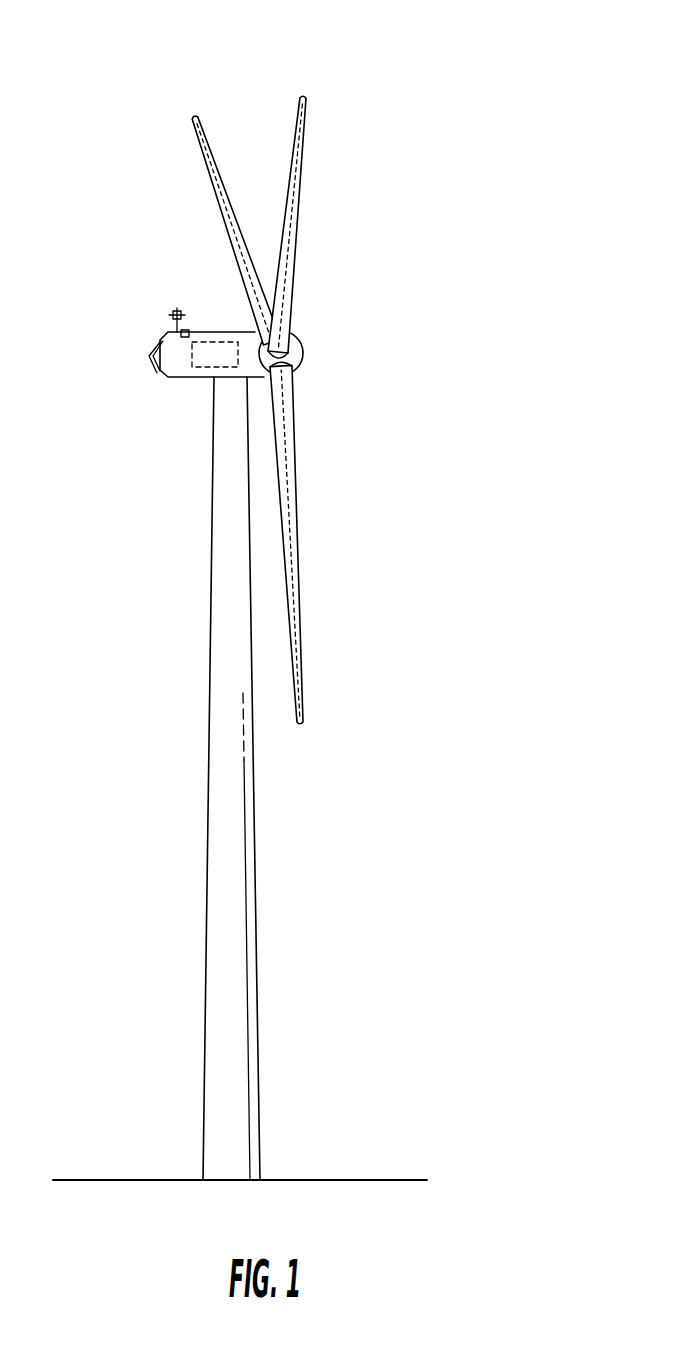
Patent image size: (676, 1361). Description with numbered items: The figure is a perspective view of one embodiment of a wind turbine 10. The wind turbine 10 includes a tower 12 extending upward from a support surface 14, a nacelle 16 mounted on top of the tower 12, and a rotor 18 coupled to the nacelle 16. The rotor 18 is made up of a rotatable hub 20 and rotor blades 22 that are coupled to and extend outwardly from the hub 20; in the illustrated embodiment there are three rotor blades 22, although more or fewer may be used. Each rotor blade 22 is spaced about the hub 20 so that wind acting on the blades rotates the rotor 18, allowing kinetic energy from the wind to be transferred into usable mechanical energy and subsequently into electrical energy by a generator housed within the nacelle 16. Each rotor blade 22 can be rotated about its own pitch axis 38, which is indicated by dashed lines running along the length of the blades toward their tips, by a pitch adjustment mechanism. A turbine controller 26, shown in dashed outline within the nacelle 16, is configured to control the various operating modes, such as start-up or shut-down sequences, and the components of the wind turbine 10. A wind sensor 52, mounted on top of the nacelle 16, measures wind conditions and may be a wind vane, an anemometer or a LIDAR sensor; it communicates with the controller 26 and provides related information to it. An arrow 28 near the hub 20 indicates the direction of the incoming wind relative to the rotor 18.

The wind turbine 10 is at (458, 160).
The tower 12 is at (258, 908).
The support surface 14 is at (110, 1180).
The nacelle 16 is at (180, 380).
The rotor 18 is at (302, 374).
The rotatable hub 20 is at (303, 353).
The rotor blade 22 is at (236, 210).
The turbine controller 26 is at (213, 330).
The wind direction 28 is at (392, 353).
The pitch axis 38 is at (194, 114).
The wind sensor 52 is at (172, 332).